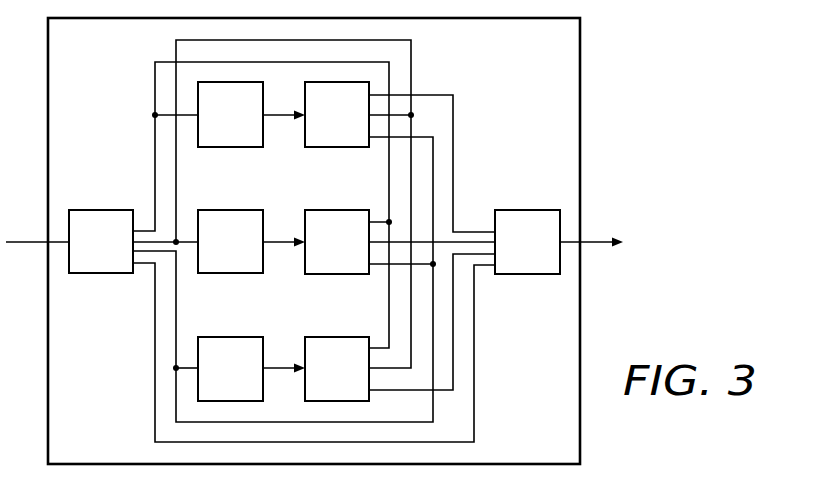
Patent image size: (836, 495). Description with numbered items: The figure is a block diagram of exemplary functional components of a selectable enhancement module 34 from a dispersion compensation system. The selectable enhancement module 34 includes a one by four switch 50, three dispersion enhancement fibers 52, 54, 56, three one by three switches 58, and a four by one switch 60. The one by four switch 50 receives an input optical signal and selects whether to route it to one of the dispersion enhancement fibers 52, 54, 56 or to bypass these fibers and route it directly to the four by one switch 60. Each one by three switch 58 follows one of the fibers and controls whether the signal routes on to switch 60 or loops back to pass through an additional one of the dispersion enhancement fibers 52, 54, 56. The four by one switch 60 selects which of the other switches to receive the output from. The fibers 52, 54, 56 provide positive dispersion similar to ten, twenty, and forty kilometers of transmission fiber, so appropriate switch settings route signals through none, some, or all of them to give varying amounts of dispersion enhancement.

The selectable enhancement module 34 is at (583, 145).
The one by four switch 50 is at (100, 210).
The dispersion enhancement fiber 52 is at (240, 147).
The dispersion enhancement fiber 54 is at (220, 210).
The dispersion enhancement fiber 56 is at (222, 337).
The one by three switches 58 is at (345, 147).
The four by one switch 60 is at (528, 210).